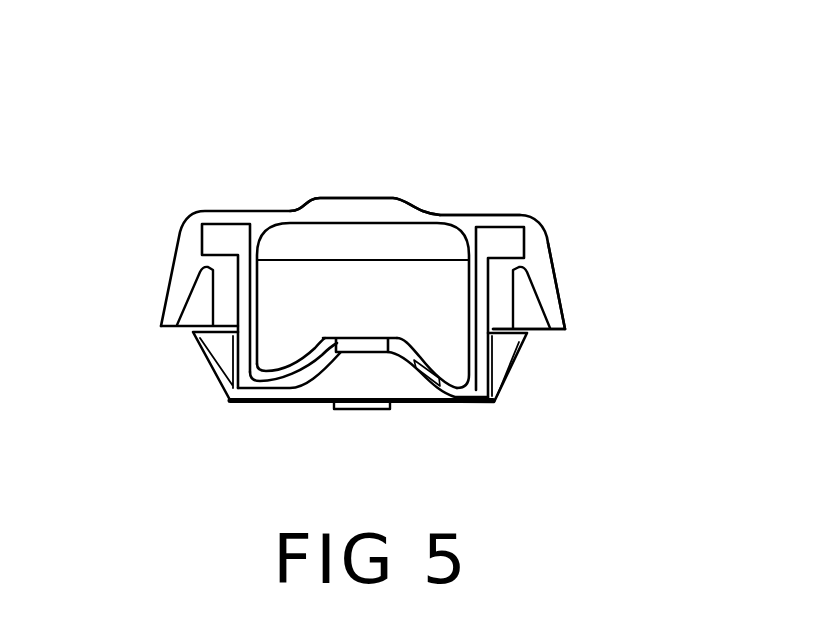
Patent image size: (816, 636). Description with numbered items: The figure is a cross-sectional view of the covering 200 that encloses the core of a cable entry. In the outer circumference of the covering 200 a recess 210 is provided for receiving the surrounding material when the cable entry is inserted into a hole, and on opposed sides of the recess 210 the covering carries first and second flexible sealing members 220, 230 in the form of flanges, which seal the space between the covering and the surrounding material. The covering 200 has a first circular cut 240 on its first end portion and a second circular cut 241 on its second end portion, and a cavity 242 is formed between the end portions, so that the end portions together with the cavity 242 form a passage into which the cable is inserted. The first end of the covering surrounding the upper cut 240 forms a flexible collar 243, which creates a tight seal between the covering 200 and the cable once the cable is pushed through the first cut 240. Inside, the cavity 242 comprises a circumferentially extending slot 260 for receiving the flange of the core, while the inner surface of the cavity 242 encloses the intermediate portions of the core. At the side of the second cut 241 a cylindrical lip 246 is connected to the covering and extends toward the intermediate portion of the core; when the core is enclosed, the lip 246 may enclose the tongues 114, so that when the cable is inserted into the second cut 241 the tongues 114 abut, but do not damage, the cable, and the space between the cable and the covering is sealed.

The covering 200 is at (532, 60).
The first circular cut 240 is at (393, 200).
The flexible collar 243 is at (440, 213).
The circumferentially extending slot 260 is at (215, 238).
The cavity 242 is at (290, 292).
The recess 210 is at (520, 303).
The first flexible sealing member 220 is at (553, 319).
The second flexible sealing member 230 is at (512, 362).
The tongues 114 is at (458, 402).
The second circular cut 241 is at (381, 347).
The cylindrical lip 246 is at (287, 370).